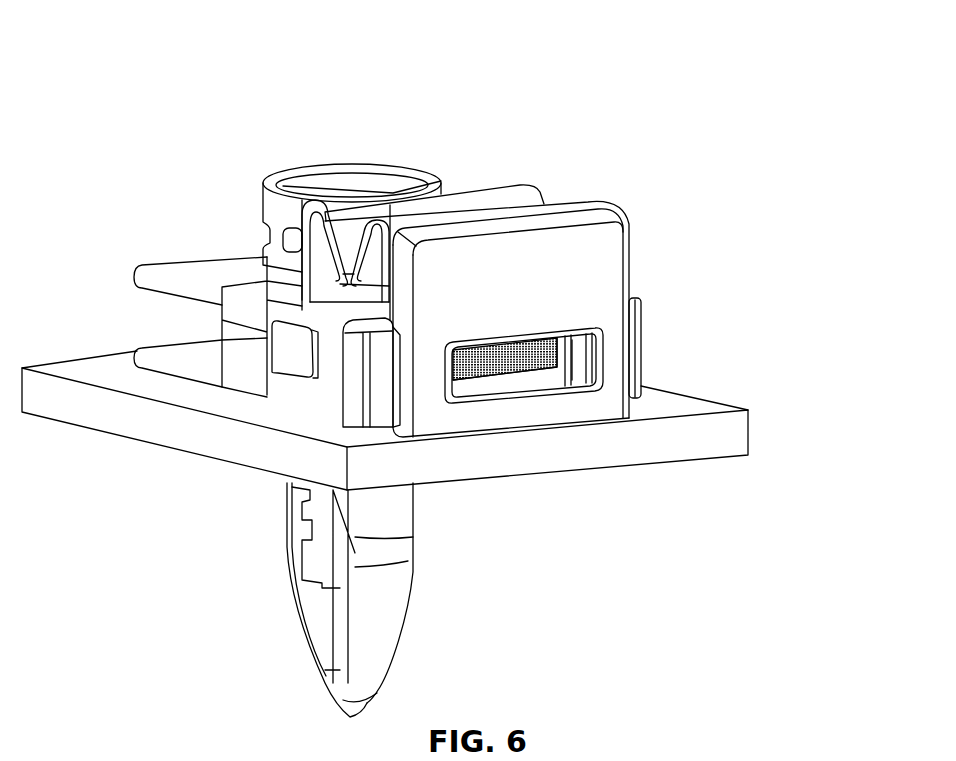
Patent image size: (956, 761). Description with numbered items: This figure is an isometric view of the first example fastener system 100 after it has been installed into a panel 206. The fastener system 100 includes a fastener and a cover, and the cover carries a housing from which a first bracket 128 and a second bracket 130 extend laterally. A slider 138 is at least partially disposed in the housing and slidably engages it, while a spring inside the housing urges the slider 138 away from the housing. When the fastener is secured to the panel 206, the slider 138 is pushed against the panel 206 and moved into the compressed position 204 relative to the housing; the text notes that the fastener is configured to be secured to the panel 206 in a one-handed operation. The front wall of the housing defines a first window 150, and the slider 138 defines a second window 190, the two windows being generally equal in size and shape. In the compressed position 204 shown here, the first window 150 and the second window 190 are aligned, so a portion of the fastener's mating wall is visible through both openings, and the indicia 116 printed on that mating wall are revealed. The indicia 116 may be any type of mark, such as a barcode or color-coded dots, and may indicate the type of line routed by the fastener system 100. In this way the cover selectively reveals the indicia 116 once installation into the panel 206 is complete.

The fastener system 100 is at (203, 97).
The compressed position 204 is at (614, 149).
The panel 206 is at (104, 369).
The first bracket 128 is at (367, 365).
The second bracket 130 is at (641, 333).
The indicia 116 is at (515, 378).
The slider 138 is at (593, 368).
The first window 150 is at (585, 352).
The second window 190 is at (462, 392).